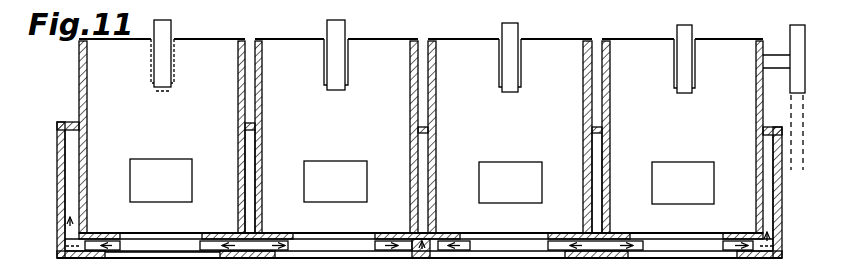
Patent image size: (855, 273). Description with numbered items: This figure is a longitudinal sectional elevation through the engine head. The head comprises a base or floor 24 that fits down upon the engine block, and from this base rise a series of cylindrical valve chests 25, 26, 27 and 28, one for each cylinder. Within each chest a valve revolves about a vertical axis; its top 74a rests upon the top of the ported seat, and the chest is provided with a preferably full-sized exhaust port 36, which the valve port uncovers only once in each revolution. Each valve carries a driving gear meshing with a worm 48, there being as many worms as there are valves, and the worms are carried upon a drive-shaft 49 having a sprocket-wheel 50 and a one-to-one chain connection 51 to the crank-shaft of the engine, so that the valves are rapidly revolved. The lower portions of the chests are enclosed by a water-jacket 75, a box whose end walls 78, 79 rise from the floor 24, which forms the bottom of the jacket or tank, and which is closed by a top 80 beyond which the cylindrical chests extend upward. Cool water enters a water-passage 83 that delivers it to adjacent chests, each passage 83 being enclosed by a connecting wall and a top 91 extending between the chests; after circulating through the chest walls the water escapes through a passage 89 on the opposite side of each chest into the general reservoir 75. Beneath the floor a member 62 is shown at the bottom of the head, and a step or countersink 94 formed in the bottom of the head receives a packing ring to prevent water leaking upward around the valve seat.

The base or floor 24 is at (101, 253).
The valve chest 25 is at (162, 136).
The valve chest 26 is at (336, 136).
The valve chest 27 is at (510, 136).
The valve chest 28 is at (682, 136).
The exhaust port 36 is at (192, 189).
The worm 48 is at (518, 32).
The drive-shaft 49 is at (779, 68).
The sprocket-wheel 50 is at (790, 37).
The chain connection 51 is at (791, 108).
The bottom plate 62 is at (131, 253).
The top of the valve 74a is at (96, 232).
The water-jacket 75 is at (53, 135).
The end wall 78 is at (60, 206).
The end wall 79 is at (782, 201).
The top 80 is at (73, 122).
The water-passage 83 is at (276, 238).
The passage 89 is at (66, 246).
The top 91 is at (424, 182).
The step or countersink 94 is at (419, 244).